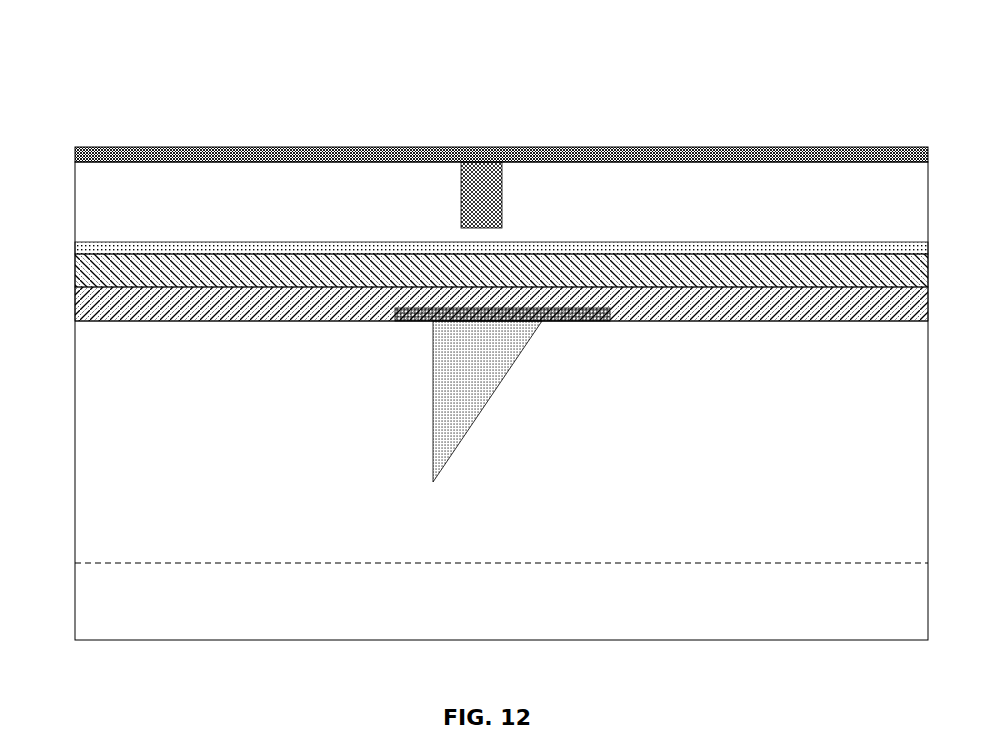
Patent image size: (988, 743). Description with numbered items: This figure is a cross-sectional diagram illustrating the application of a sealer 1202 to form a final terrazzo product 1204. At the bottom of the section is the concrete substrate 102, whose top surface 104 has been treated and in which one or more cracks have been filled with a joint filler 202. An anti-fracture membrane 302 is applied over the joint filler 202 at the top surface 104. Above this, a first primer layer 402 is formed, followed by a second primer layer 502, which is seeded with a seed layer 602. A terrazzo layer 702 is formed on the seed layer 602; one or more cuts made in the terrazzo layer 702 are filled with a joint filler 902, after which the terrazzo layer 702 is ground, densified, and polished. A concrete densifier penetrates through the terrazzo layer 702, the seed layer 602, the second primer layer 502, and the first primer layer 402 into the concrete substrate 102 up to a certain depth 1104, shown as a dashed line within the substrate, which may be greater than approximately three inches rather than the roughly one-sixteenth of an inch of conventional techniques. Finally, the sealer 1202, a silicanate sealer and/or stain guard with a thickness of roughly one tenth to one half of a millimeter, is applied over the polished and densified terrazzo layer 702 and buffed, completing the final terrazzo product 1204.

The concrete substrate 102 is at (501, 401).
The top surface 104 is at (124, 322).
The joint filler 202 is at (487, 401).
The anti-fracture membrane 302 is at (577, 313).
The first primer layer 402 is at (501, 304).
The second primer layer 502 is at (501, 270).
The seed layer 602 is at (96, 246).
The terrazzo layer 702 is at (501, 202).
The joint filler 902 is at (482, 193).
The depth 1104 is at (278, 561).
The sealer 1202 is at (92, 153).
The final terrazzo product 1204 is at (83, 80).